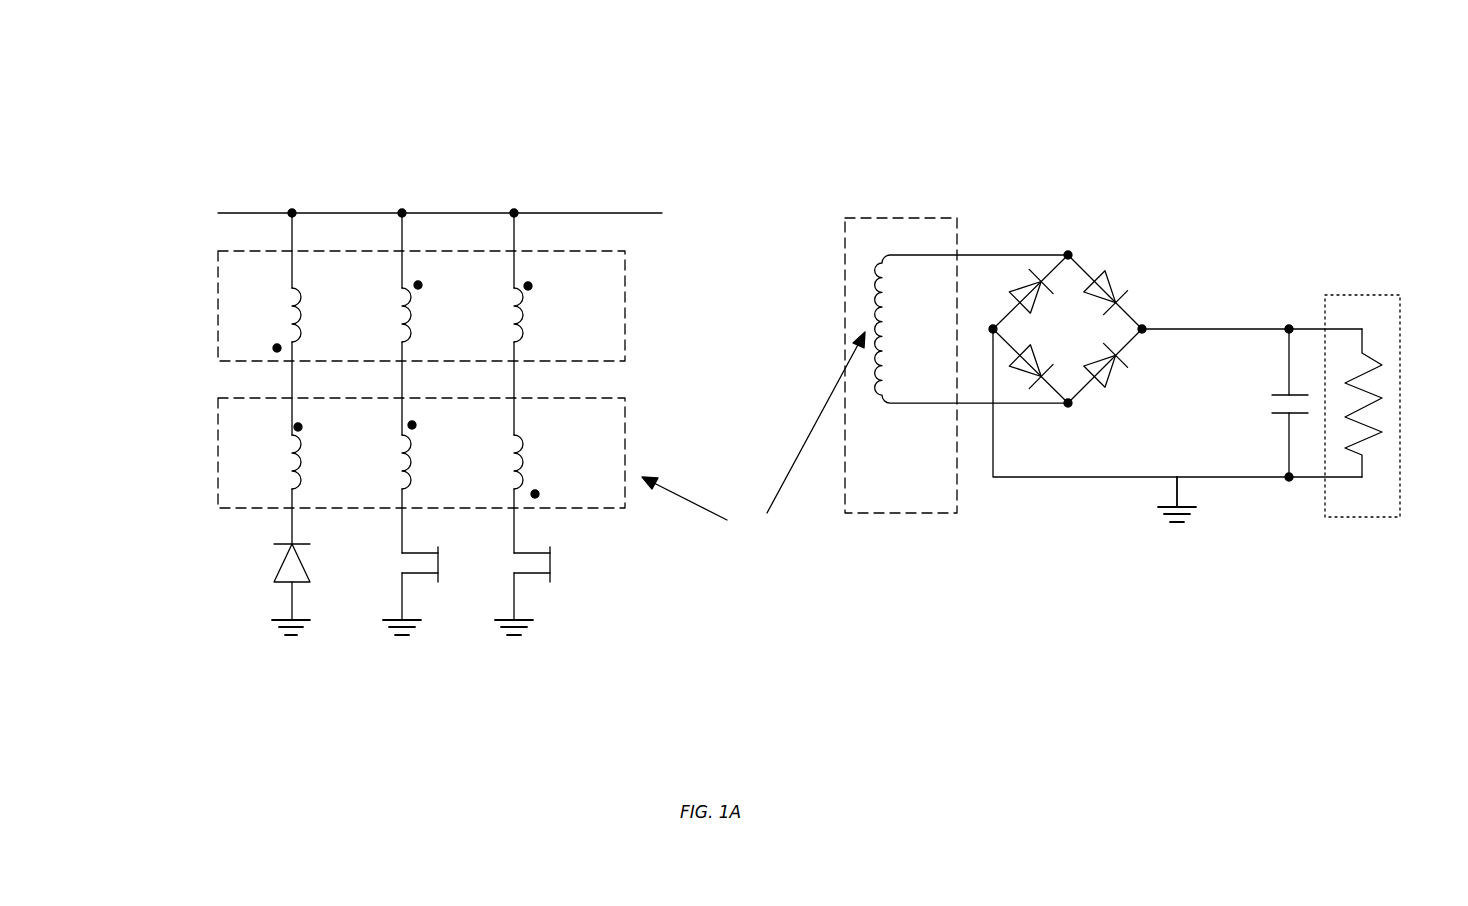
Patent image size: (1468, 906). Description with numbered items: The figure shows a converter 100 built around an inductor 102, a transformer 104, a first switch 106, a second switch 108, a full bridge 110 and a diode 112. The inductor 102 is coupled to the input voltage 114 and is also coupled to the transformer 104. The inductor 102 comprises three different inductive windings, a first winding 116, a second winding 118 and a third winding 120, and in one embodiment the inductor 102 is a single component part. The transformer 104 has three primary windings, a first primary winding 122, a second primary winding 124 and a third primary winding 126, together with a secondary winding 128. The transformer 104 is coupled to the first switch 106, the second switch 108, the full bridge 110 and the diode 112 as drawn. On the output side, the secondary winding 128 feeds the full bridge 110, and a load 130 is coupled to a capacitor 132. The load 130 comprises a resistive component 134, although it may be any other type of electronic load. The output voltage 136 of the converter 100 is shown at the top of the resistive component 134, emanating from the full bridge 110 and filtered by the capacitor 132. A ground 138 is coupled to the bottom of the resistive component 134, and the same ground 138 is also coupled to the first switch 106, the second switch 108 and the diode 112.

The converter 100 is at (628, 170).
The inductor 102 is at (625, 305).
The transformer 104 is at (625, 455).
The switch Q1 106 is at (357, 563).
The switch Q2 108 is at (470, 563).
The full bridge 110 is at (1088, 260).
The diode D1 112 is at (262, 580).
The input voltage 114 is at (468, 212).
The winding NLA 116 is at (530, 328).
The winding NLB 118 is at (398, 300).
The winding NLC 120 is at (280, 293).
The winding NPA 122 is at (528, 470).
The winding NPB 124 is at (398, 443).
The winding NPC 126 is at (278, 433).
The secondary winding 128 is at (870, 275).
The load 130 is at (1400, 360).
The capacitor 132 is at (1273, 393).
The resistive component 134 is at (1372, 440).
The output voltage 136 is at (1362, 320).
The ground 138 is at (272, 635).